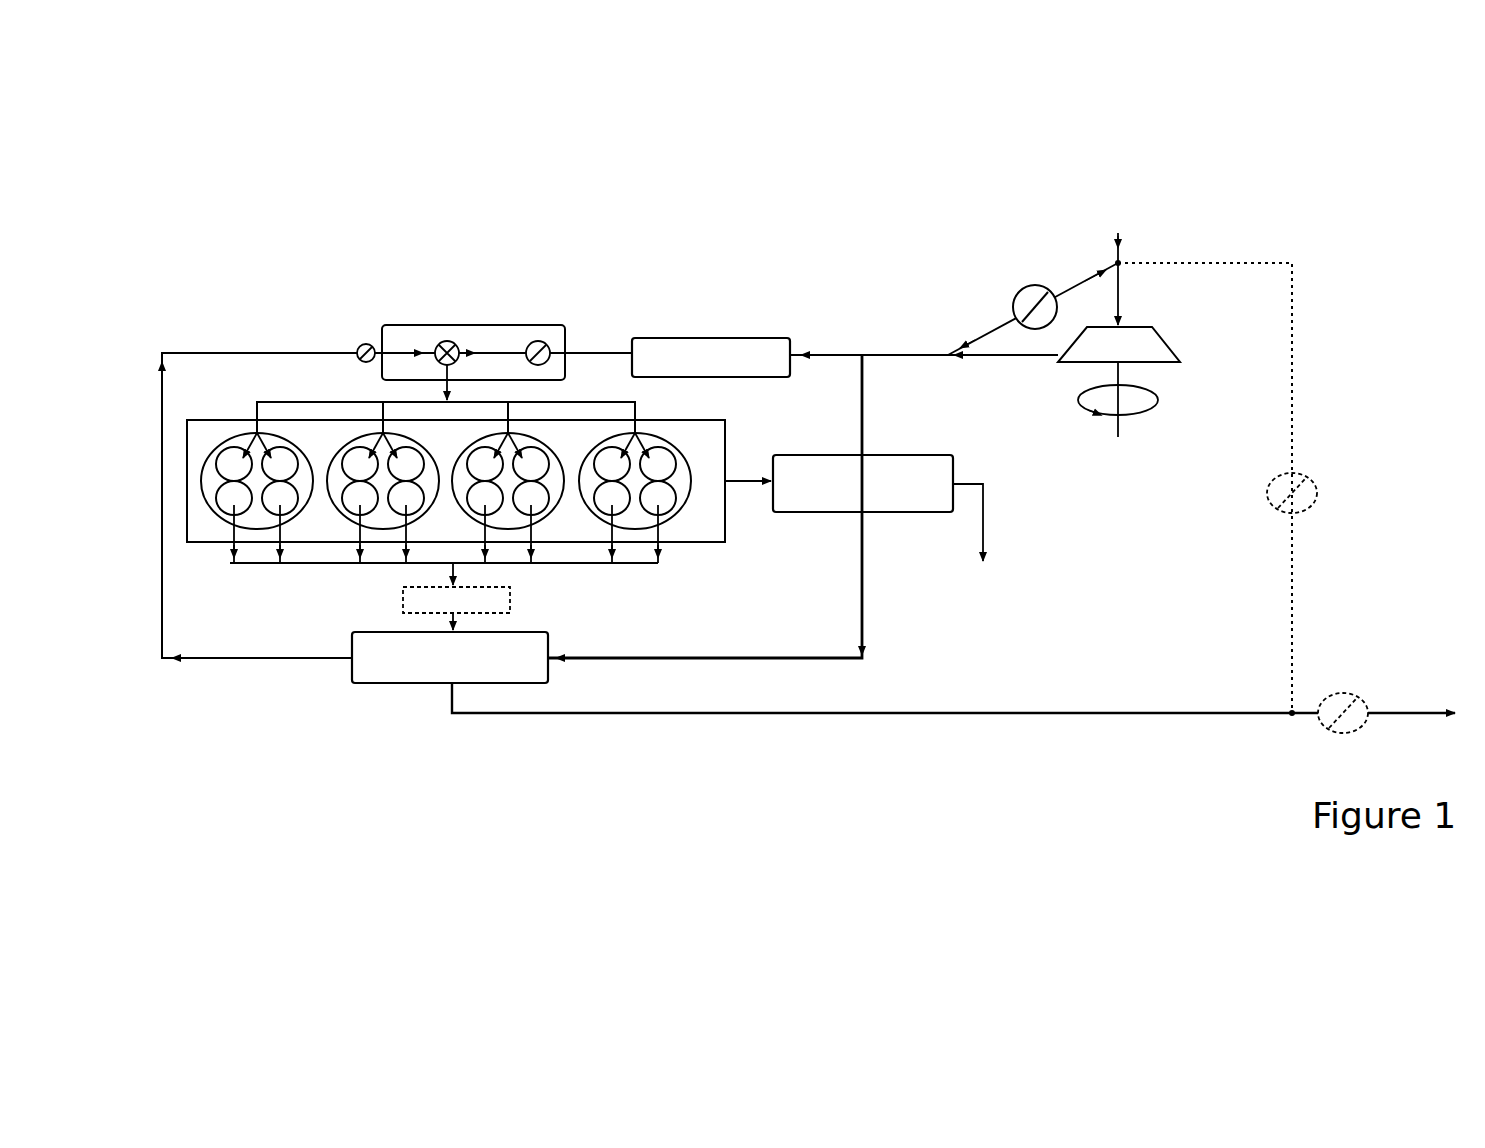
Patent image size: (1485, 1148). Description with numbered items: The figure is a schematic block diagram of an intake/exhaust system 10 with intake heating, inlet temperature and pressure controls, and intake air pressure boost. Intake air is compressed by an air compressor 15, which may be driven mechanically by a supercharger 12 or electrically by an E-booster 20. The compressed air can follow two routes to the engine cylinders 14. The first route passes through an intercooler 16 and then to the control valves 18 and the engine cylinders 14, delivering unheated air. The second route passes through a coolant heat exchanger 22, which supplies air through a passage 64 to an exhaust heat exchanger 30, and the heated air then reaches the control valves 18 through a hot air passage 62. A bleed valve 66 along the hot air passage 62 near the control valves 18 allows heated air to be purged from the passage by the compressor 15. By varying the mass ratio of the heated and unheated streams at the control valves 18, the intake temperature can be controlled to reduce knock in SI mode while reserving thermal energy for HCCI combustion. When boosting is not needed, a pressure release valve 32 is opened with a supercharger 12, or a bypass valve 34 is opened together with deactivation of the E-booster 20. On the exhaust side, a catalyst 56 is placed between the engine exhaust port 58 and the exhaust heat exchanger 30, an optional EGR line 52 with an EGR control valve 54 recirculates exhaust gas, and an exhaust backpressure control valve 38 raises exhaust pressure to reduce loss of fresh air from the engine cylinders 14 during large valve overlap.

The intake/exhaust system 10 is at (1350, 208).
The supercharger 12 is at (1118, 412).
The E-booster 20 is at (1118, 412).
The engine cylinders 14 is at (213, 480).
The air compressor 15 is at (1158, 365).
The intercooler 16 is at (728, 338).
The control valves 18 is at (476, 326).
The coolant heat exchanger 22 is at (897, 455).
The exhaust heat exchanger 30 is at (385, 684).
The pressure release valve 32 is at (1033, 307).
The bypass valve 34 is at (1040, 287).
The exhaust backpressure control valve 38 is at (1352, 698).
The exhaust gas recirculation (EGR) line 52 is at (1292, 417).
The EGR control valve 54 is at (1317, 490).
The catalyst 56 is at (510, 600).
The engine exhaust port 58 is at (445, 570).
The hot air passage 62 is at (268, 352).
The passage 64 is at (868, 640).
The bleed valve 66 is at (360, 346).